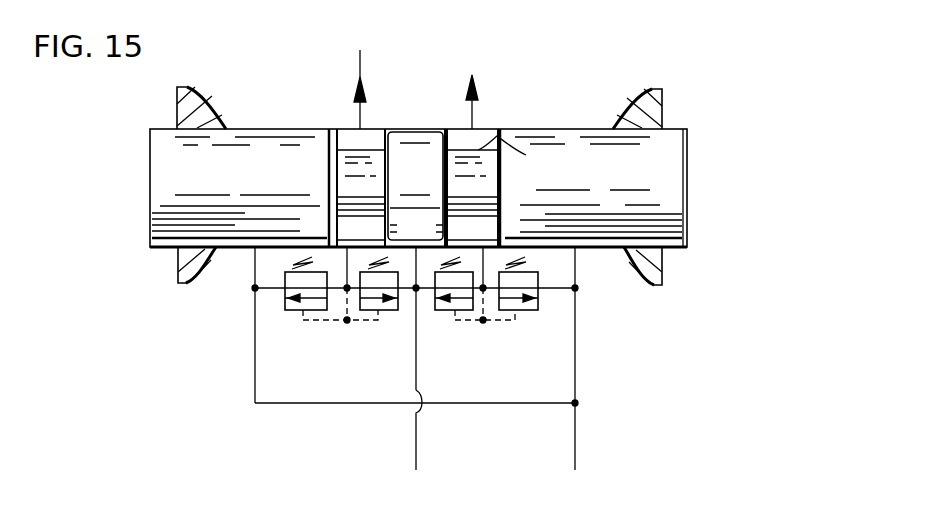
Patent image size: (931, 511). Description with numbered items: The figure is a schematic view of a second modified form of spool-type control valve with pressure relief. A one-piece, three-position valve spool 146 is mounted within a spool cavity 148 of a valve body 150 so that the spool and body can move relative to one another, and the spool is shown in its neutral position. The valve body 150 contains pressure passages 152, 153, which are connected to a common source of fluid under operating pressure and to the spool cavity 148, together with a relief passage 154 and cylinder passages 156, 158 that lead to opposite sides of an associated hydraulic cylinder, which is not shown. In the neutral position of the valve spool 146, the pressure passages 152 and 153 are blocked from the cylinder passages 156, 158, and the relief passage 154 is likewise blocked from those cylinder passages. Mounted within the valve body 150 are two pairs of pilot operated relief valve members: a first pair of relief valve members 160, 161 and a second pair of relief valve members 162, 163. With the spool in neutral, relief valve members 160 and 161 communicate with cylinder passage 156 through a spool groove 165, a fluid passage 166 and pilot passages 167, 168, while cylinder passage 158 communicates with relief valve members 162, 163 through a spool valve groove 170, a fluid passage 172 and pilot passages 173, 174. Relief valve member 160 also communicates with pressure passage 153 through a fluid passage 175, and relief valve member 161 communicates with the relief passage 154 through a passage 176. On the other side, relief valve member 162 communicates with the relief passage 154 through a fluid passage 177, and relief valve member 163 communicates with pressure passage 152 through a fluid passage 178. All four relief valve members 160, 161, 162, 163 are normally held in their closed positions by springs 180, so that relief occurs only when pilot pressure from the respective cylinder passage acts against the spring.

The valve spool 146 is at (150, 185).
The spool cavity 148 is at (175, 247).
The valve body 150 is at (178, 275).
The pressure passage 152 is at (577, 380).
The pressure passage 153 is at (255, 370).
The relief passage 154 is at (418, 340).
The cylinder passage 156 is at (364, 88).
The cylinder passage 158 is at (476, 88).
The relief valve member 160 is at (289, 312).
The relief valve member 161 is at (392, 312).
The relief valve member 162 is at (468, 311).
The relief valve member 163 is at (540, 312).
The spool groove 165 is at (350, 150).
The fluid passage 166 is at (345, 265).
The pilot passage 167 is at (322, 321).
The pilot passage 168 is at (360, 322).
The spool valve groove 170 is at (520, 151).
The fluid passage 172 is at (483, 263).
The pilot passage 173 is at (466, 322).
The pilot passage 174 is at (517, 322).
The fluid passage 175 is at (256, 292).
The passage 176 is at (406, 273).
The fluid passage 177 is at (436, 270).
The fluid passage 178 is at (577, 287).
The springs 180 is at (300, 262).